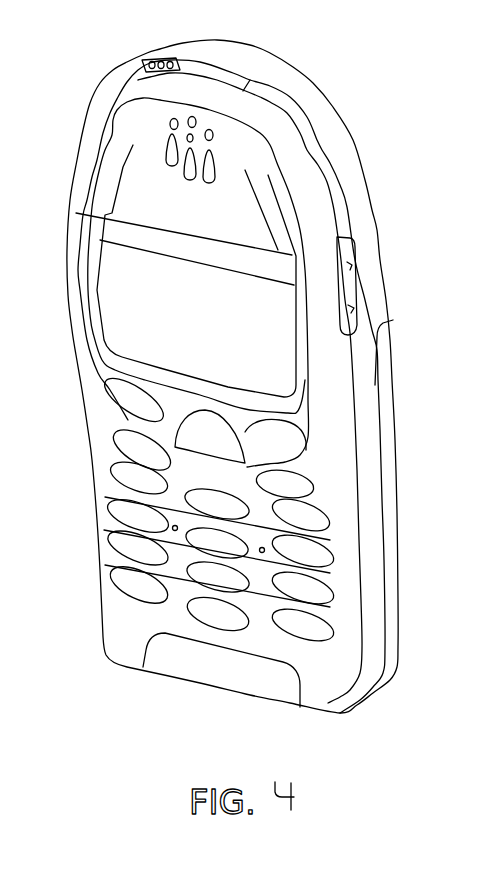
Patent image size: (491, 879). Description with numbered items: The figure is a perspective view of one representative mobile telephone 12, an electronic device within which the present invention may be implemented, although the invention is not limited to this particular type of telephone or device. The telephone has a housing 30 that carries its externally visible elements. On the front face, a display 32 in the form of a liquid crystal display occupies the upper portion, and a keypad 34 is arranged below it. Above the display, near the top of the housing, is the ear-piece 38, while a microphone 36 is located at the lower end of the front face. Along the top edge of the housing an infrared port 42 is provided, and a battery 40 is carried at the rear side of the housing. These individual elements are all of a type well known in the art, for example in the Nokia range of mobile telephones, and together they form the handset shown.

The mobile telephone 12 is at (329, 46).
The housing 30 is at (357, 177).
The display 32 is at (270, 352).
The keypad 34 is at (300, 630).
The microphone 36 is at (167, 663).
The ear-piece 38 is at (166, 143).
The battery 40 is at (391, 612).
The infrared port 42 is at (212, 70).